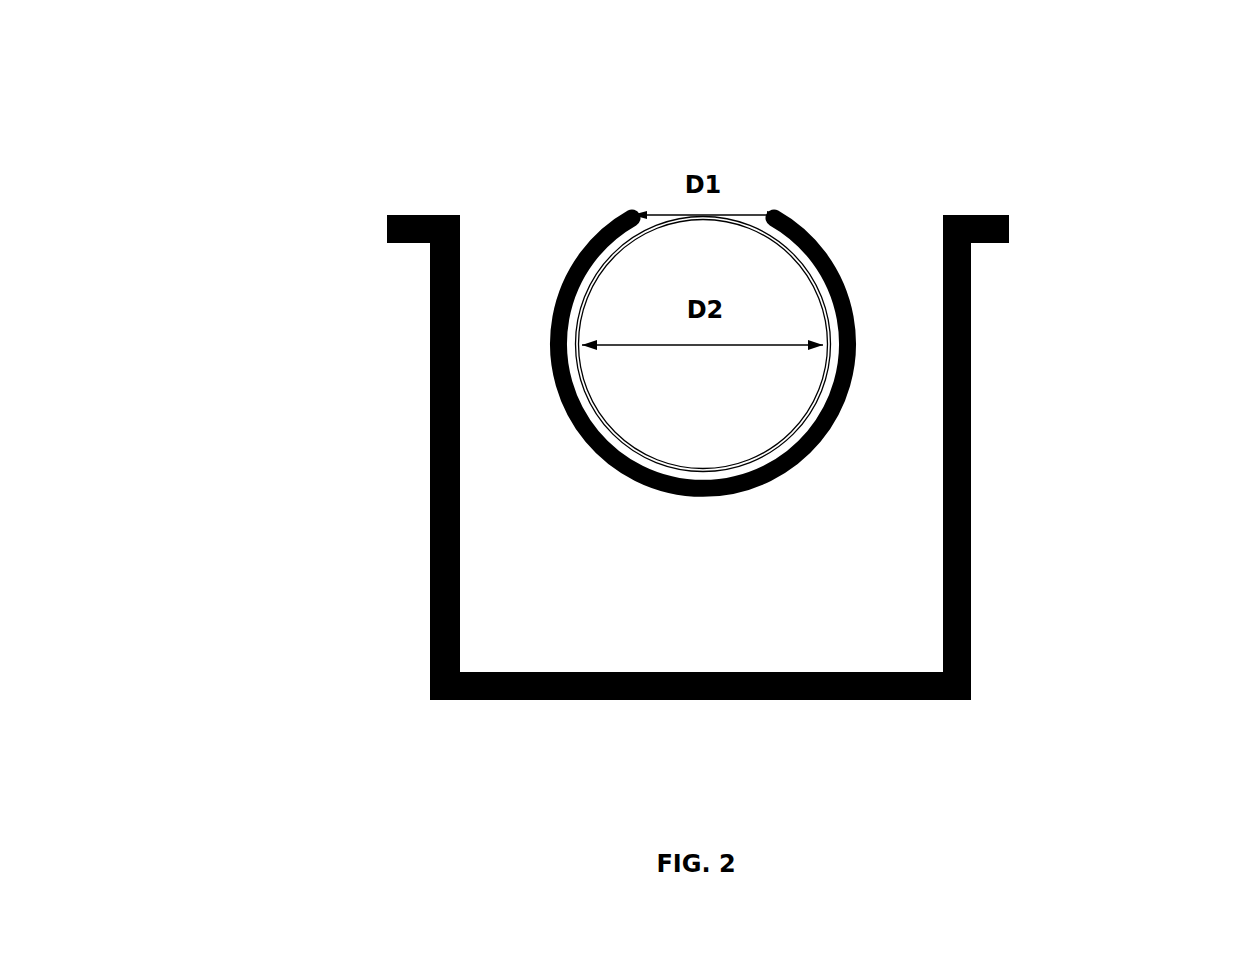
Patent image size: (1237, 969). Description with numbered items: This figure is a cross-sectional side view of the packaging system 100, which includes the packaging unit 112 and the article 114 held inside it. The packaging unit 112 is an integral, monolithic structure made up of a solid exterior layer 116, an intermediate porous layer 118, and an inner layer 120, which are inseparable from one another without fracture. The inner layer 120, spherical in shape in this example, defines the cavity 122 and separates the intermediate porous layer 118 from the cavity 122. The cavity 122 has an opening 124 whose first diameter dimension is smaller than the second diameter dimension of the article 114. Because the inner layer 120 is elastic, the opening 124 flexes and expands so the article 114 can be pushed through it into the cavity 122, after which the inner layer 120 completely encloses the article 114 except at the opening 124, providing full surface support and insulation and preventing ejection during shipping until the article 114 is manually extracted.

The packaging system 100 is at (442, 150).
The packaging unit 112 is at (400, 653).
The article 114 is at (797, 263).
The solid exterior layer 116 is at (430, 462).
The intermediate porous layer 118 is at (872, 537).
The inner layer 120 is at (855, 340).
The cavity 122 is at (832, 360).
The opening 124 is at (668, 203).